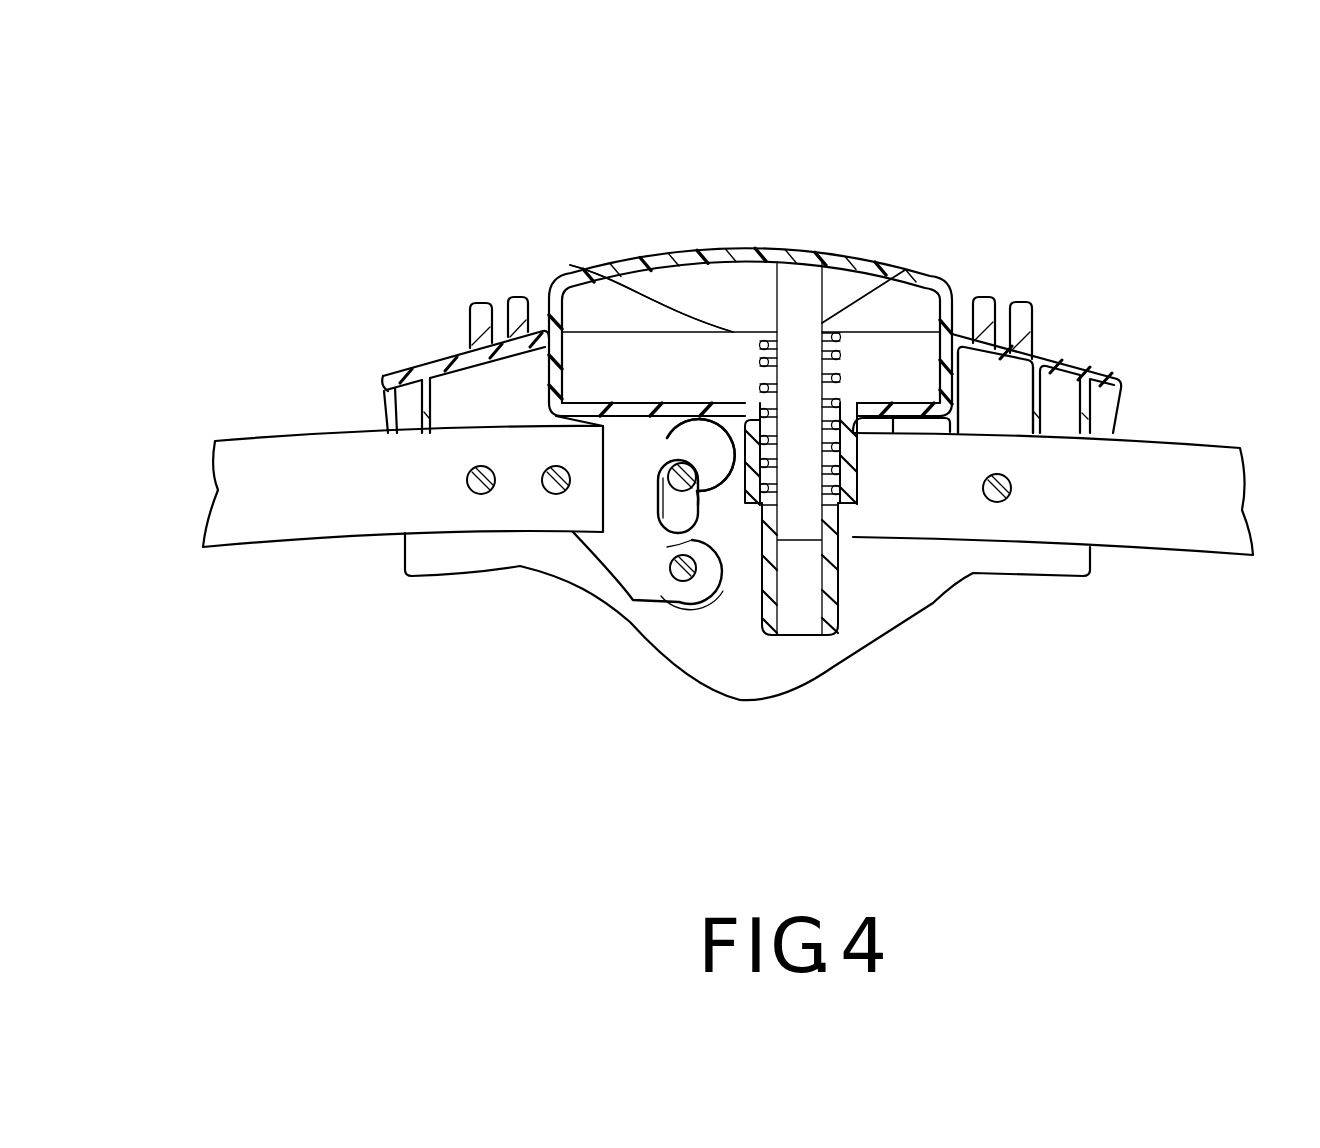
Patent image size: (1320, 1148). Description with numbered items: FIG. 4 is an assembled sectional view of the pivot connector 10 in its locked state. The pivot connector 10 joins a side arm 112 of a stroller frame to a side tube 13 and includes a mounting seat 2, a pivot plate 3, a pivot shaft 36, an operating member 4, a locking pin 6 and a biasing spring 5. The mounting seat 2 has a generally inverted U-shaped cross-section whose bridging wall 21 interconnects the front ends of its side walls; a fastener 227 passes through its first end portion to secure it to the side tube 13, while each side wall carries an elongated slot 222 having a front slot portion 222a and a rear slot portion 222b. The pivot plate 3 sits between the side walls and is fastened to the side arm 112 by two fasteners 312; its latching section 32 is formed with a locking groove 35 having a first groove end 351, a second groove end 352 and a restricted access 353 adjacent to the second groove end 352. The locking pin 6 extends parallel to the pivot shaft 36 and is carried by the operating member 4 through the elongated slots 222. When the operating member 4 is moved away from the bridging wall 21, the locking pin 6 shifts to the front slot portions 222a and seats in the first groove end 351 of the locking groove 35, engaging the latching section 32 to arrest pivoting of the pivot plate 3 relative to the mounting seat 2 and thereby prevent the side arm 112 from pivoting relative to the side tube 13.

The pivot connector 10 is at (847, 190).
The mounting seat 2 is at (1073, 357).
The bridging wall 21 is at (917, 410).
The pivot plate 3 is at (633, 601).
The operating member 4 is at (867, 247).
The biasing spring 5 is at (840, 333).
The locking pin 6 is at (751, 364).
The front slot portion 222a is at (683, 527).
The rear slot portion 222b is at (710, 530).
The elongated slot 222 is at (800, 580).
The latching section 32 is at (642, 477).
The locking groove 35 is at (660, 490).
The first groove end 351 is at (660, 462).
The second groove end 352 is at (663, 532).
The restricted access 353 is at (712, 532).
The pivot shaft 36 is at (688, 582).
The side arm 112 is at (325, 517).
The side tube 13 is at (1145, 520).
The fasteners 312 is at (483, 495).
The fastener 227 is at (1000, 502).